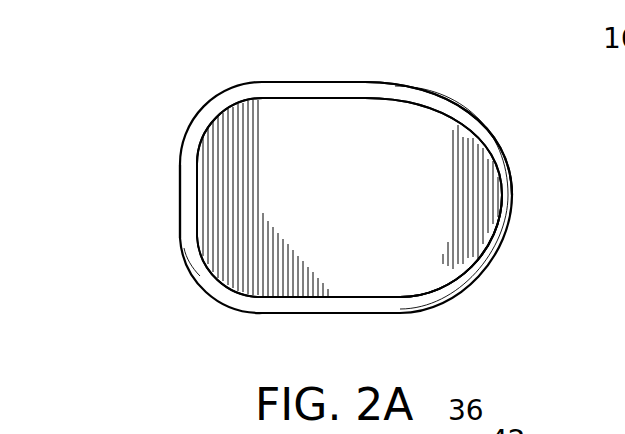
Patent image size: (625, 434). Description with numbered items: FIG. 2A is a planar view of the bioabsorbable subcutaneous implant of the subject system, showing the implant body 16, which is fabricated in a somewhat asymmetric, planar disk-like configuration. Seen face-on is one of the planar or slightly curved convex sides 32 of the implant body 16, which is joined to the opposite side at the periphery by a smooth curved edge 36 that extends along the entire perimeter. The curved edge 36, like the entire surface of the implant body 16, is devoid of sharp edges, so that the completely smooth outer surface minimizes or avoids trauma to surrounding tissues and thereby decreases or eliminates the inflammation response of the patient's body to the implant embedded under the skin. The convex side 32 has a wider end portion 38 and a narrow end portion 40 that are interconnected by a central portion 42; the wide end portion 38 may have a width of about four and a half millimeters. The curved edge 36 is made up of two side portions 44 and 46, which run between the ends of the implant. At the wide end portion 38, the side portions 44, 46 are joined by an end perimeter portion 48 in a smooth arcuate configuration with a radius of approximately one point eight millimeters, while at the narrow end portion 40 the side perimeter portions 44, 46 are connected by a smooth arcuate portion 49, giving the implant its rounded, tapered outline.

The implant body 16 is at (132, 95).
The convex side 32 is at (449, 180).
The curved edge 36 is at (431, 97).
The wider end portion 38 is at (210, 190).
The narrow end portion 40 is at (479, 207).
The central portion 42 is at (327, 194).
The side portion 44 is at (308, 82).
The side portion 46 is at (298, 314).
The end perimeter portion 48 is at (180, 181).
The smooth arcuate portion 49 is at (514, 193).